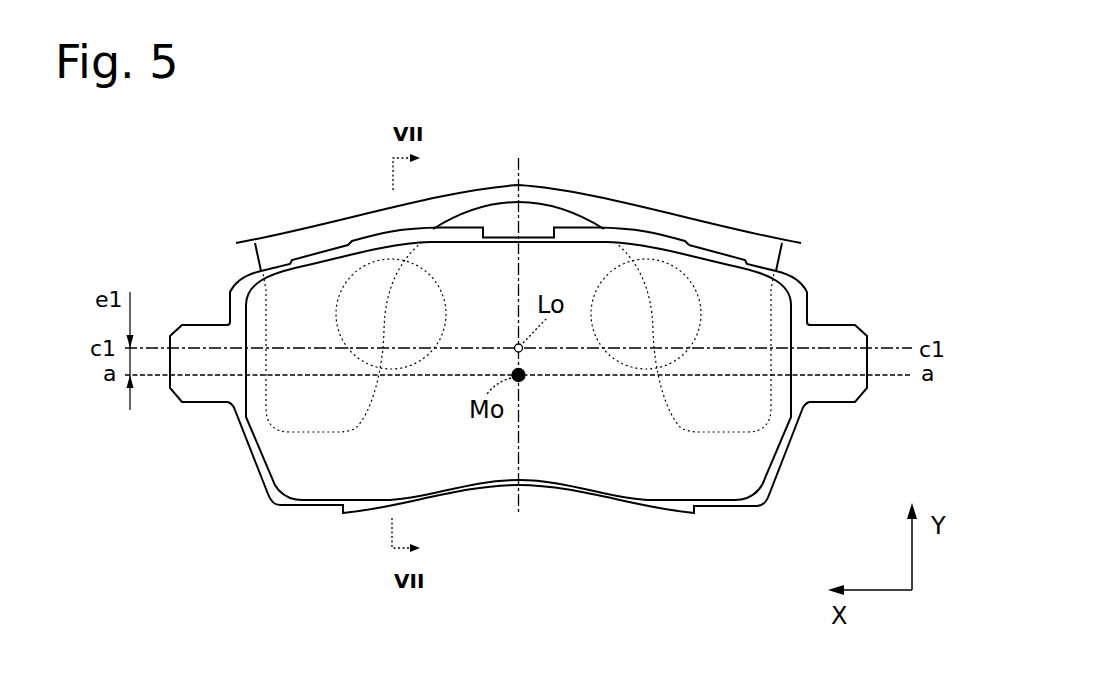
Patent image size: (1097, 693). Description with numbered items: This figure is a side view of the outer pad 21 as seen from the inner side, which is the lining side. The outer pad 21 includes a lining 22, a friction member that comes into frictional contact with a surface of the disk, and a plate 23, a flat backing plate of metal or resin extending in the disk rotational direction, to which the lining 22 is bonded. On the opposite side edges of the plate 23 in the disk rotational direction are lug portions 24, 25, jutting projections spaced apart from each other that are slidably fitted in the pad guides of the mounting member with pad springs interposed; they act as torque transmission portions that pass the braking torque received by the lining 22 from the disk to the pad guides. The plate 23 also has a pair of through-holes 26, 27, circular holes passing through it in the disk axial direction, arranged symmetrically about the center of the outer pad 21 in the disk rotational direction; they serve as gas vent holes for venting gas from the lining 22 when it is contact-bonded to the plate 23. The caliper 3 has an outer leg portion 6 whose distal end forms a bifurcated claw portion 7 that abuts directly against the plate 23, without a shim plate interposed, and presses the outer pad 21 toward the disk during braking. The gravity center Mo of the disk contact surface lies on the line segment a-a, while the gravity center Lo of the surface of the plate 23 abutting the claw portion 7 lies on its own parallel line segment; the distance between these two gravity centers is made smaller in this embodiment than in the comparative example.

The caliper 3 is at (553, 198).
The outer leg portion 6 is at (470, 200).
The claw portion 7 is at (738, 250).
The outer pad 21 is at (290, 222).
The lining 22 is at (612, 462).
The plate 23 is at (653, 237).
The lug portion 24 is at (198, 338).
The lug portion 25 is at (846, 328).
The through-hole 26 is at (683, 272).
The through-hole 27 is at (337, 323).